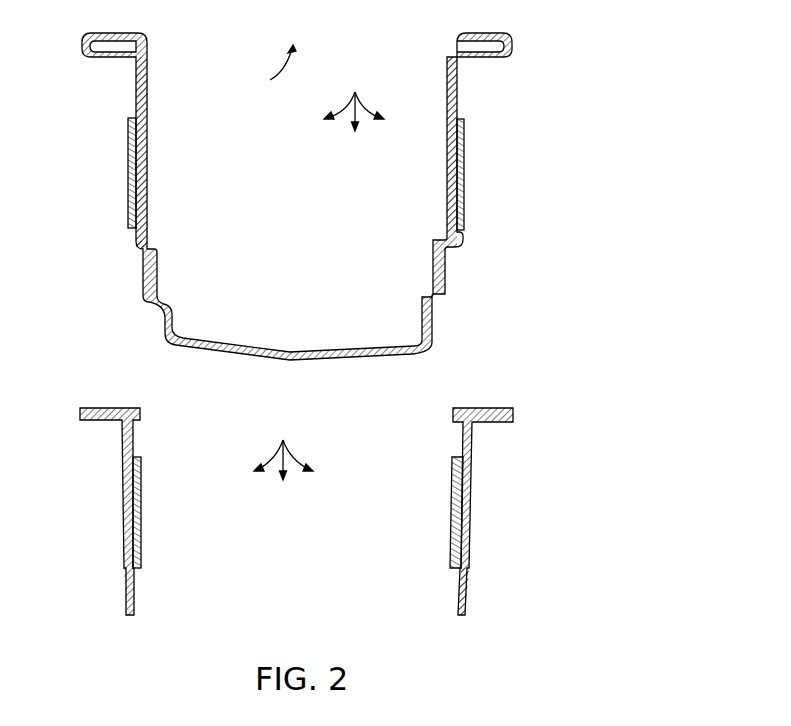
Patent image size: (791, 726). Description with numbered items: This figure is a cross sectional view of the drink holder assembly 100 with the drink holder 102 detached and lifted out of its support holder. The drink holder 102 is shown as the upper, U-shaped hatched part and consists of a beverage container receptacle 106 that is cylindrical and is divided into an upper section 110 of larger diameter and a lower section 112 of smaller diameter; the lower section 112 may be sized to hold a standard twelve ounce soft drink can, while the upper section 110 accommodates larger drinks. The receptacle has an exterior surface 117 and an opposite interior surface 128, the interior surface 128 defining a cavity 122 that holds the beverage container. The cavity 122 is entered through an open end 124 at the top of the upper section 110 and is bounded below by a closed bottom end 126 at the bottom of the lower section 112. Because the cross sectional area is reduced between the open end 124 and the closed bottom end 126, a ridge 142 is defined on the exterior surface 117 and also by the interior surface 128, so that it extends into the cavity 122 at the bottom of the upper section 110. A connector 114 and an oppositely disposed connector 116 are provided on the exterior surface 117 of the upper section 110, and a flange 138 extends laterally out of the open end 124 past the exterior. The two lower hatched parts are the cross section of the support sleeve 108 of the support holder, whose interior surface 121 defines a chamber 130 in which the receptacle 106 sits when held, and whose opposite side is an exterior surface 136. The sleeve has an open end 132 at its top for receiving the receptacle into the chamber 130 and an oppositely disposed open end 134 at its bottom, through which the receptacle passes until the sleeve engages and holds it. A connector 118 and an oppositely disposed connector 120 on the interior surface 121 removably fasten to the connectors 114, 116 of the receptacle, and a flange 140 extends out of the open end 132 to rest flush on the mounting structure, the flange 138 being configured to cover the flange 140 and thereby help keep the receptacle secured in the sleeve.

The drink holder assembly 100 is at (374, 332).
The drink holder 102 is at (313, 184).
The beverage container receptacle 106 is at (136, 86).
The support sleeve 108 is at (466, 590).
The upper section 110 is at (147, 120).
The lower section 112 is at (158, 290).
The connector 114 is at (128, 165).
The connector 116 is at (464, 185).
The exterior surface 117 is at (458, 92).
The connector 118 is at (141, 502).
The connector 120 is at (452, 512).
The interior surface 121 is at (134, 595).
The cavity 122 is at (354, 97).
The open end 124 is at (273, 77).
The closed bottom end 126 is at (295, 353).
The interior surface 128 is at (447, 182).
The chamber 130 is at (283, 446).
The open end 132 is at (482, 512).
The open end 134 is at (382, 622).
The exterior surface 136 is at (471, 448).
The flange 138 is at (505, 37).
The flange 140 is at (513, 410).
The ridge 142 is at (433, 240).